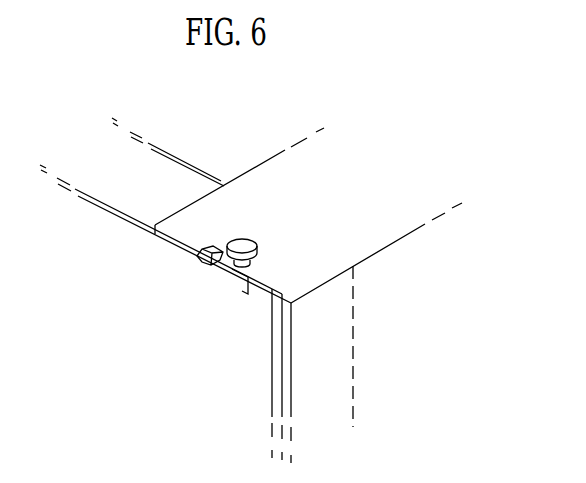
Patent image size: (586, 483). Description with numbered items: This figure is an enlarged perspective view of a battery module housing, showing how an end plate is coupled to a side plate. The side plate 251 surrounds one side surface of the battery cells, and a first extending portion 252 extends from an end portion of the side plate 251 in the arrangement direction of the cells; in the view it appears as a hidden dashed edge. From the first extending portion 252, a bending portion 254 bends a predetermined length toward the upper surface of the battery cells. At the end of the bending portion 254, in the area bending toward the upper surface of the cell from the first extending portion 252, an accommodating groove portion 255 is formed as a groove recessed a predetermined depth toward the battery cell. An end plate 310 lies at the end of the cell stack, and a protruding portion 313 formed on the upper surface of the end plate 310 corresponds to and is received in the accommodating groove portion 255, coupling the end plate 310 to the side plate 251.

The side plate 251 is at (417, 305).
The first extending portion 252 is at (315, 363).
The bending portion 254 is at (283, 180).
The accommodating groove portion 255 is at (199, 257).
The end plate 310 is at (227, 380).
The protruding portion 313 is at (240, 239).